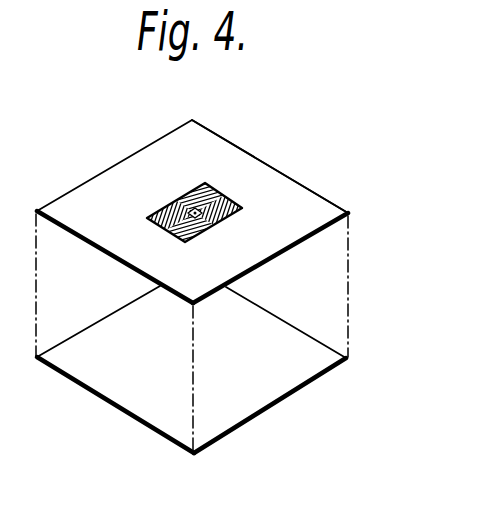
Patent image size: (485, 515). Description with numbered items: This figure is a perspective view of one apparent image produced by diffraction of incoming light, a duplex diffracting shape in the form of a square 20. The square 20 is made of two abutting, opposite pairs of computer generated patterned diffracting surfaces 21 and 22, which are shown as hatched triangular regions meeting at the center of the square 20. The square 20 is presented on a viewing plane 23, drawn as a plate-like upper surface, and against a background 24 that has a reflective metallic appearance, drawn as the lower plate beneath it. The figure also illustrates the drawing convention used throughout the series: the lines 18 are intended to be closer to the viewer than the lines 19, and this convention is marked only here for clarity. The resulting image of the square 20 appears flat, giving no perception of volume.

The lines 18 is at (102, 252).
The lines 19 is at (302, 185).
The square 20 is at (196, 192).
The patterned diffracting surfaces 21 is at (200, 187).
The patterned diffracting surfaces 22 is at (160, 209).
The viewing plane 23 is at (313, 236).
The background 24 is at (255, 393).